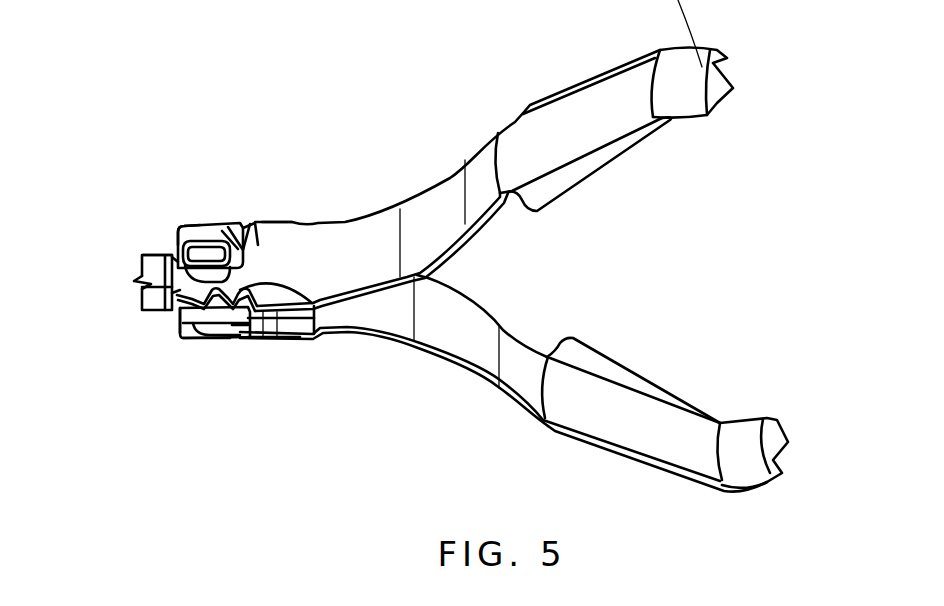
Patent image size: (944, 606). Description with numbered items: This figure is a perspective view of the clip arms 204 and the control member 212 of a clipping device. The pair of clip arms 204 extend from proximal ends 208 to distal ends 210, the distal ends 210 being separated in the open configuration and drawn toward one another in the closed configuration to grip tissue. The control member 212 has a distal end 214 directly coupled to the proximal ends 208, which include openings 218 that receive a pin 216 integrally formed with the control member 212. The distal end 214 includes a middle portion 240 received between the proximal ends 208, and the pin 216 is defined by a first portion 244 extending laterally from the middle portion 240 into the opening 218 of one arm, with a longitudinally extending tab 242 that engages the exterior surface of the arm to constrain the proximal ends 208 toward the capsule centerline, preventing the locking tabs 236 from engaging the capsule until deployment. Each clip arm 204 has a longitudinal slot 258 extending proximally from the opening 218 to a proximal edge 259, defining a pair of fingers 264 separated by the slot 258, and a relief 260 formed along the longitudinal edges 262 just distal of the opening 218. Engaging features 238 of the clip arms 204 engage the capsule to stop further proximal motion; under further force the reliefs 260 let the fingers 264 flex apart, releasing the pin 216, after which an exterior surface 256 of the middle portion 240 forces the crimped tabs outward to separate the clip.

The clip arms 204 is at (413, 203).
The proximal ends 208 is at (252, 243).
The distal ends 210 is at (760, 447).
The control member 212 is at (140, 310).
The distal end 214 is at (197, 345).
The pin 216 is at (213, 238).
The openings 218 is at (281, 318).
The locking tabs 236 is at (180, 315).
The engaging features 238 is at (573, 173).
The middle portion 240 is at (238, 345).
The longitudinally extending tab 242 is at (180, 240).
The first portion 244 is at (241, 245).
The exterior surface 256 is at (231, 342).
The longitudinal slot 258 is at (178, 258).
The proximal edge 259 is at (136, 281).
The relief 260 is at (236, 239).
The longitudinal edges 262 is at (279, 230).
The fingers 264 is at (213, 226).